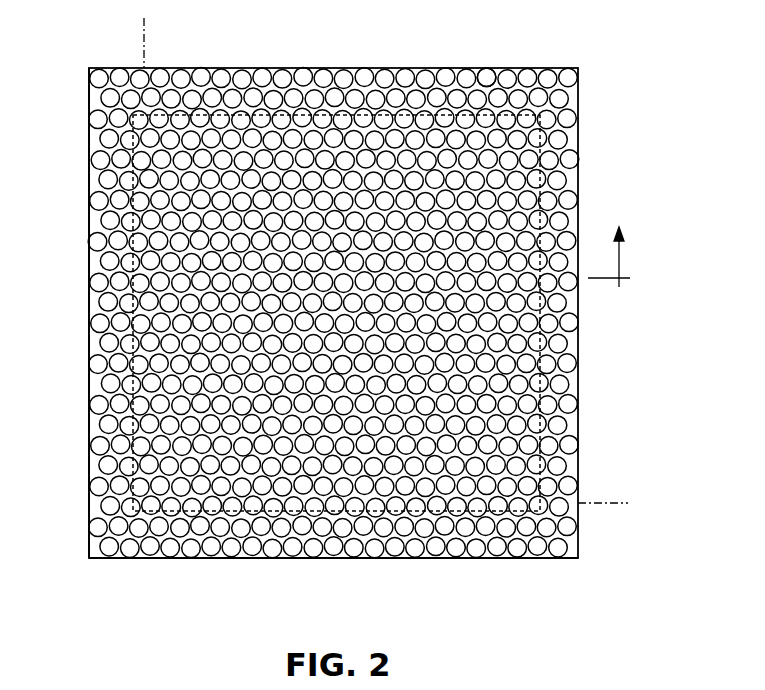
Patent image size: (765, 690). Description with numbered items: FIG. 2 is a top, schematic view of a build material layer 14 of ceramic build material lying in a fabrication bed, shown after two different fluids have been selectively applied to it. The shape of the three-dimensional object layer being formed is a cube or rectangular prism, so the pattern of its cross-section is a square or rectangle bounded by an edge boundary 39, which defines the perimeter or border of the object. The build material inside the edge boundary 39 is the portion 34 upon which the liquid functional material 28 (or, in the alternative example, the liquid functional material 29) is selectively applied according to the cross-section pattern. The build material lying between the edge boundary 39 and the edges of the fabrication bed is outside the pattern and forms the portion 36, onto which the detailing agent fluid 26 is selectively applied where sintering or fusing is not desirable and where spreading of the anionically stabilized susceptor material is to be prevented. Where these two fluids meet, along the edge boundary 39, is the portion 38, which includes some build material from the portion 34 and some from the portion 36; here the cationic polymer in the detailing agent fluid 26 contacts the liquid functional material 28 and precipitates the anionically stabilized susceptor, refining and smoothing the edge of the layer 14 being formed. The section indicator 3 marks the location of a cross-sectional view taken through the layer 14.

The layer 14 is at (370, 315).
The detailing agent fluid 26 is at (337, 558).
The liquid functional material 28 is at (515, 53).
The liquid functional material 29 is at (487, 74).
The portion 34 is at (580, 420).
The portion 36 is at (553, 80).
The portion 38 is at (91, 165).
The edge boundary 39 is at (145, 30).
The section view indicator 3 is at (609, 243).